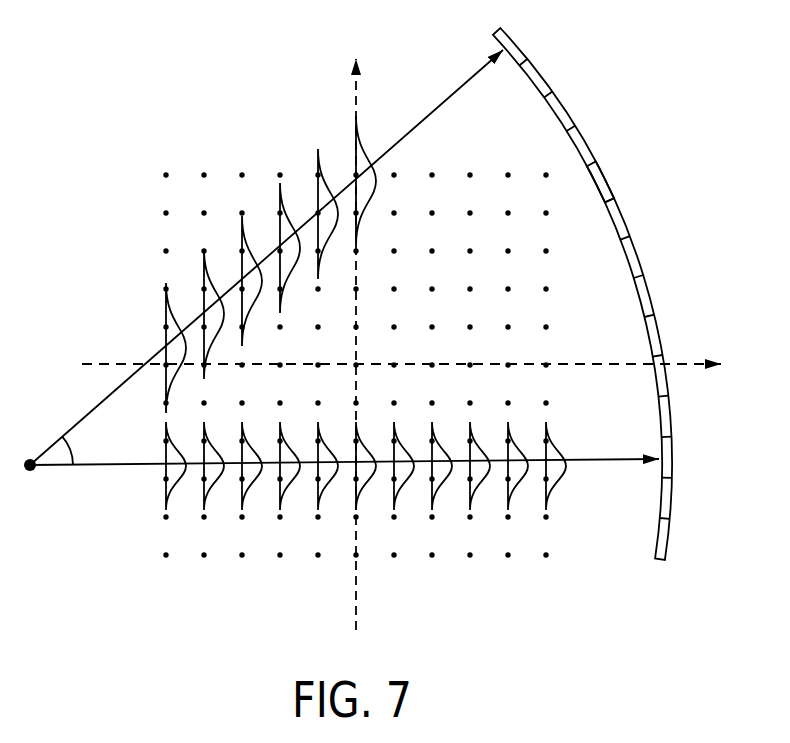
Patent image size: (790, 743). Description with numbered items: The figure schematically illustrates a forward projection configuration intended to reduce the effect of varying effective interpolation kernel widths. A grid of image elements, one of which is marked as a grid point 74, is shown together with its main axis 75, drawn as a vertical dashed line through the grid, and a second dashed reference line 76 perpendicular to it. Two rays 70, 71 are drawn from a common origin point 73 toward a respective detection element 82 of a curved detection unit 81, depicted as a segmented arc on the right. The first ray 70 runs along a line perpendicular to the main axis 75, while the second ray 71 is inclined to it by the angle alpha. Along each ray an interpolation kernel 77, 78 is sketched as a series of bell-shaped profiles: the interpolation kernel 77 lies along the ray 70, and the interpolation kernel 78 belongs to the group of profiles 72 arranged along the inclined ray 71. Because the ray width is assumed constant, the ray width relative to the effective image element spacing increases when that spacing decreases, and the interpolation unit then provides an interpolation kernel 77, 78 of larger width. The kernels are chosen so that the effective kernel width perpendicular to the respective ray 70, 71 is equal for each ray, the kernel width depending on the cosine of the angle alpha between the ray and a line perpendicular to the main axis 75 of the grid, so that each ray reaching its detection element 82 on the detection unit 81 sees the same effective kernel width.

The ray 70 is at (100, 467).
The ray 71 is at (123, 383).
The beam profiles along outer direction 72 is at (233, 153).
The focal spot / source point 73 is at (30, 473).
The grid point (sampling position) 74 is at (159, 557).
The main axis of the grid 75 is at (358, 81).
The horizontal reference axis 76 is at (697, 378).
The interpolation kernel 77 is at (184, 512).
The interpolation kernel 78 is at (173, 284).
The detection unit 81 is at (623, 294).
The detection element 82 is at (610, 176).